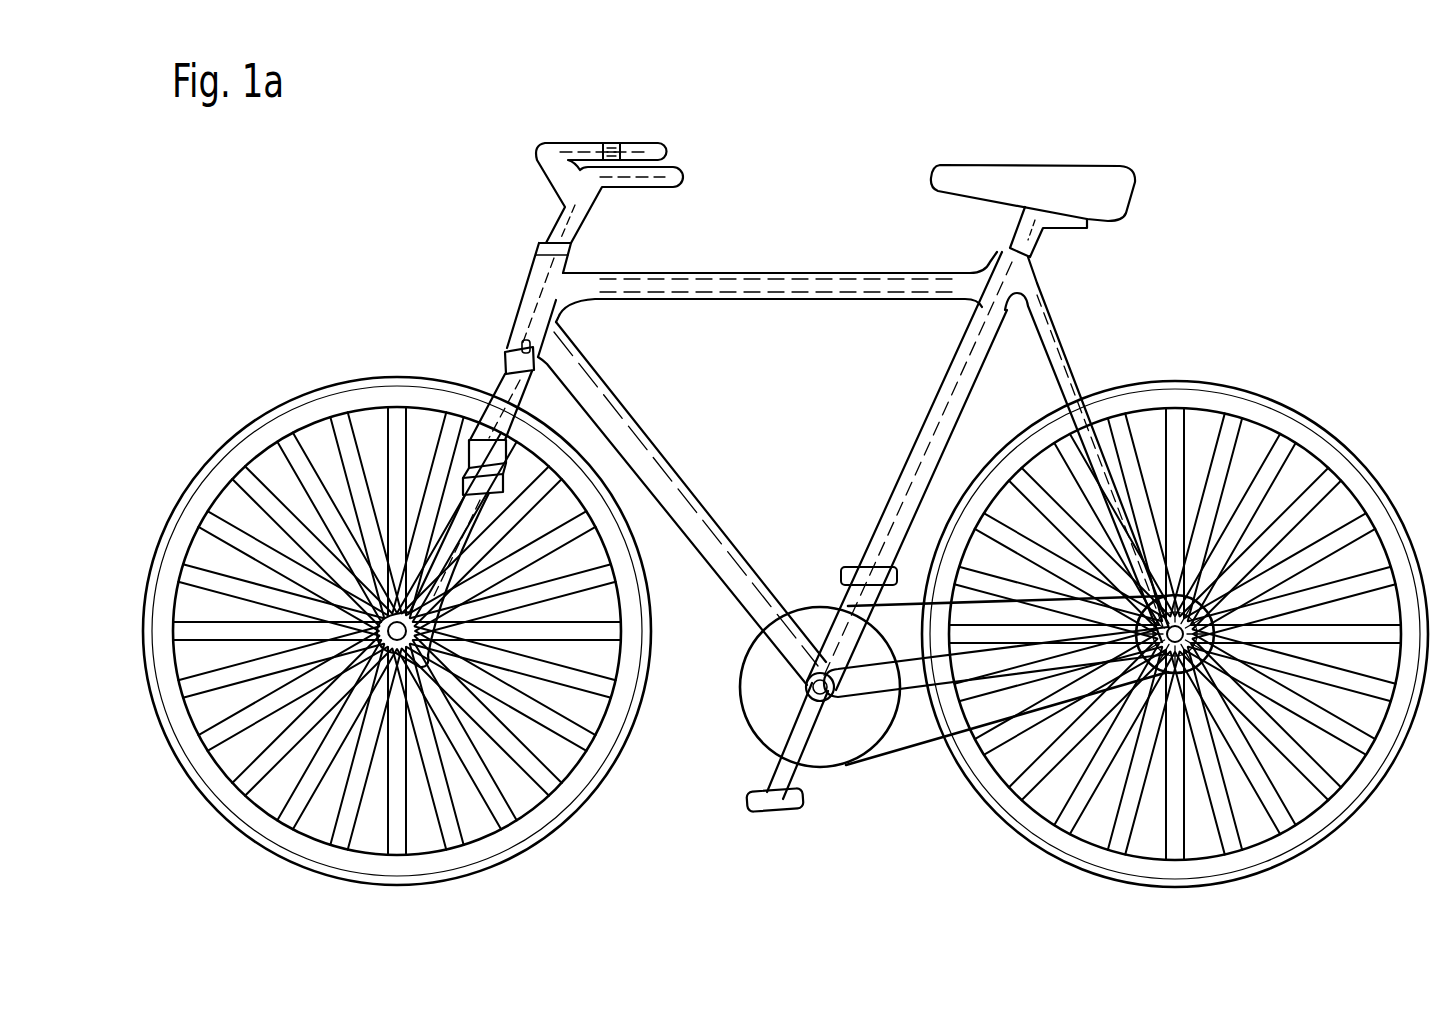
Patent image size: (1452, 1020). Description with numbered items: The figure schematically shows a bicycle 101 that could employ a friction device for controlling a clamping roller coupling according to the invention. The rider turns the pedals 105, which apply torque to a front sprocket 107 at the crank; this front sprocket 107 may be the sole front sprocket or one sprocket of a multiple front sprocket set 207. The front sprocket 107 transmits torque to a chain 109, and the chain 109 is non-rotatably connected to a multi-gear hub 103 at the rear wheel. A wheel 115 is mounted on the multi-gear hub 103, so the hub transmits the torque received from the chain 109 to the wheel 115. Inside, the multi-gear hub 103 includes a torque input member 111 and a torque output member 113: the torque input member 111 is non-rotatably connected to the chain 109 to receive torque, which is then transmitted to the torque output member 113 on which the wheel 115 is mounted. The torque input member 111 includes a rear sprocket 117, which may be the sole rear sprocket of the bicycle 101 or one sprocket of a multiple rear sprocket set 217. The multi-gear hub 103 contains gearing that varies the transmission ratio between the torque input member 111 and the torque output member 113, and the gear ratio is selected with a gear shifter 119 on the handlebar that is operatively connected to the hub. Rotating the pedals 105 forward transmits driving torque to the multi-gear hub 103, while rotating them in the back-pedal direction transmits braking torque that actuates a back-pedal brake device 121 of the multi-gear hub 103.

The bicycle 101 is at (443, 342).
The multi-gear hub 103 is at (1170, 568).
The pedals 105 is at (745, 803).
The front sprocket 107 is at (888, 748).
The chain 109 is at (928, 740).
The torque input member 111 is at (1160, 675).
The torque output member 113 is at (1165, 665).
The wheel 115 is at (997, 813).
The rear sprocket 117 is at (1222, 586).
The gear shifter 119 is at (618, 142).
The back-pedal brake device 121 is at (1180, 672).
The multiple front sprocket set 207 is at (728, 707).
The multiple rear sprocket set 217 is at (1232, 590).